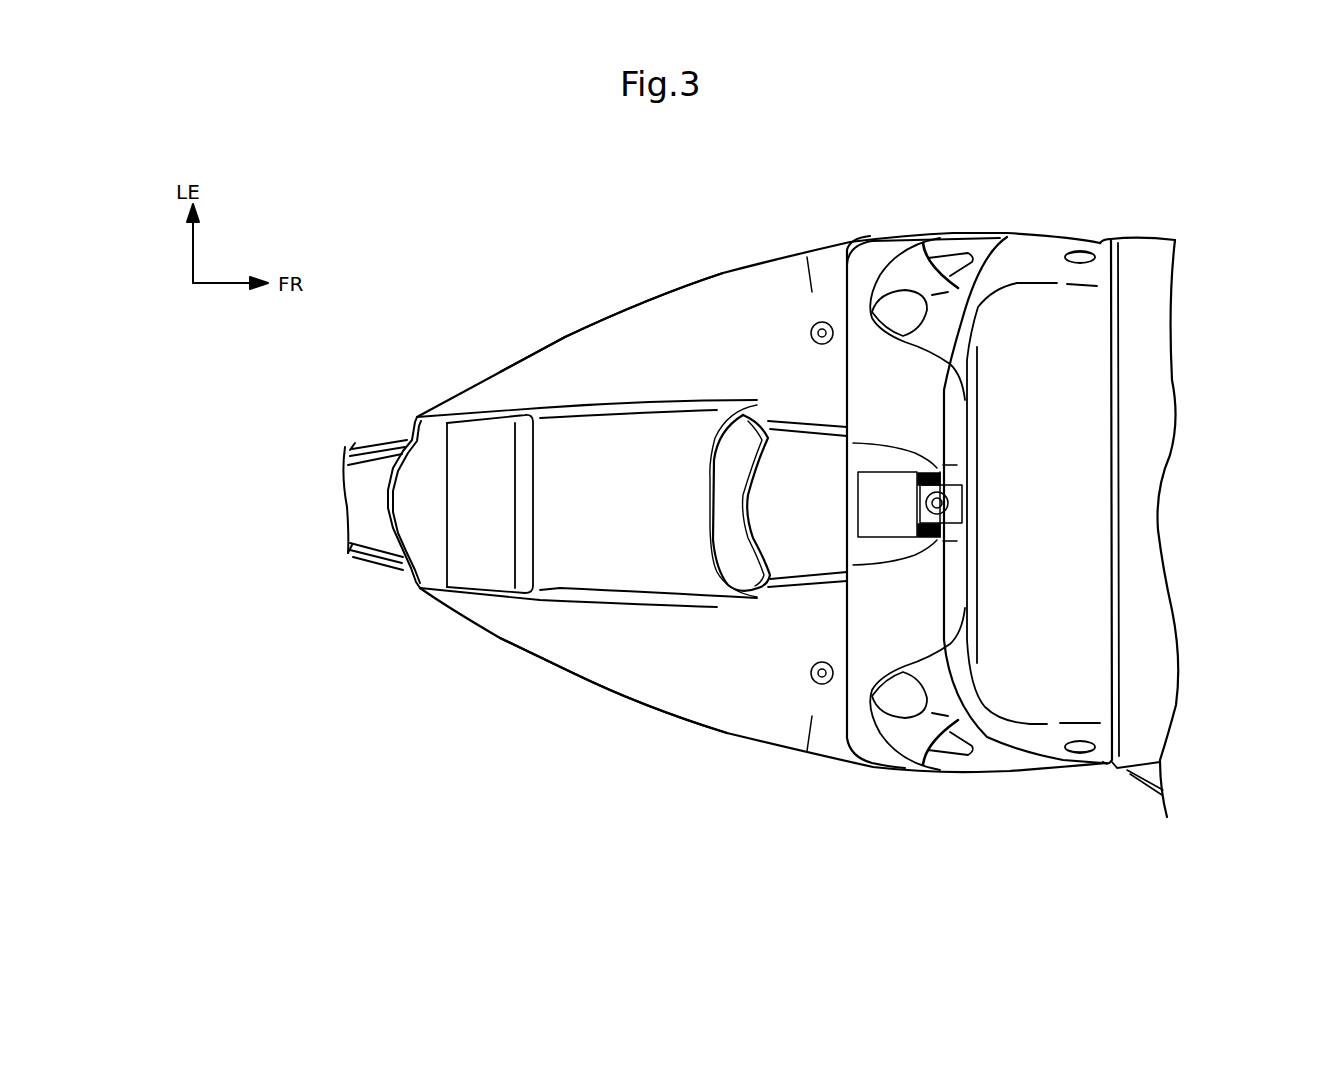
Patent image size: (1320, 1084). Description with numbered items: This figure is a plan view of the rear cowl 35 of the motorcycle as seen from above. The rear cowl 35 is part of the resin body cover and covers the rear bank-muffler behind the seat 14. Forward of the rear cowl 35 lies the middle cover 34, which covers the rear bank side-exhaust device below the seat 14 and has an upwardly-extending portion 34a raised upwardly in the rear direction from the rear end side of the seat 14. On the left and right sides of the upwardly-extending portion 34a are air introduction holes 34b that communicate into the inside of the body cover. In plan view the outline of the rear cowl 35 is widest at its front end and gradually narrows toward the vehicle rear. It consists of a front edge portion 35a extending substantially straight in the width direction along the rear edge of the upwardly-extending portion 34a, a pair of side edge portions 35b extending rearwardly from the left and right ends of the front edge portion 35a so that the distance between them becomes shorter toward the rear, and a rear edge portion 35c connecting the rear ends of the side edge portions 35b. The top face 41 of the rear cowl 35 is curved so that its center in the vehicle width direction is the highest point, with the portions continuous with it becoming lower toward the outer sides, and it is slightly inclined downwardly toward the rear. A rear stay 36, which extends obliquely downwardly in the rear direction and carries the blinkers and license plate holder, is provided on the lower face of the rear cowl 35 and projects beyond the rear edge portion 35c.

The seat 14 is at (1145, 484).
The middle cover 34 is at (1049, 234).
The upwardly-extending portion 34a is at (976, 287).
The air introduction holes 34b is at (902, 288).
The rear cowl 35 is at (591, 326).
The front edge portion 35a is at (853, 358).
The side edge portions 35b is at (648, 297).
The rear edge portion 35c is at (390, 470).
The rear stay 36 is at (352, 499).
The top face 41 is at (680, 452).